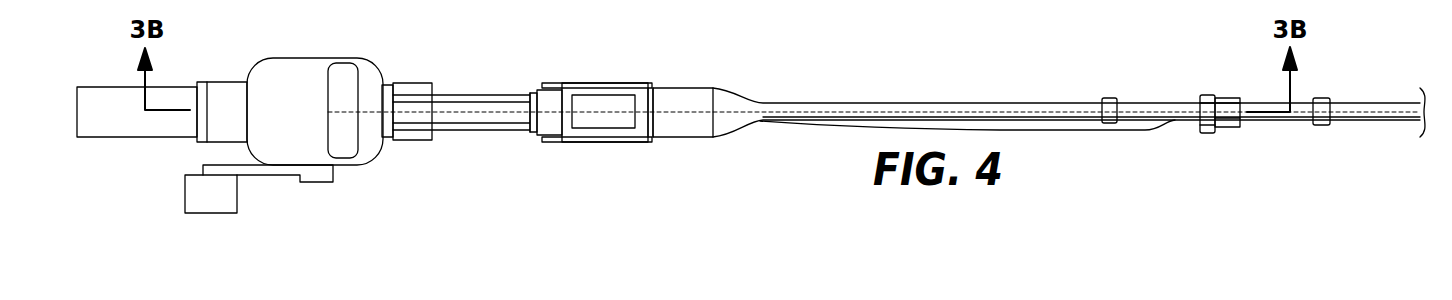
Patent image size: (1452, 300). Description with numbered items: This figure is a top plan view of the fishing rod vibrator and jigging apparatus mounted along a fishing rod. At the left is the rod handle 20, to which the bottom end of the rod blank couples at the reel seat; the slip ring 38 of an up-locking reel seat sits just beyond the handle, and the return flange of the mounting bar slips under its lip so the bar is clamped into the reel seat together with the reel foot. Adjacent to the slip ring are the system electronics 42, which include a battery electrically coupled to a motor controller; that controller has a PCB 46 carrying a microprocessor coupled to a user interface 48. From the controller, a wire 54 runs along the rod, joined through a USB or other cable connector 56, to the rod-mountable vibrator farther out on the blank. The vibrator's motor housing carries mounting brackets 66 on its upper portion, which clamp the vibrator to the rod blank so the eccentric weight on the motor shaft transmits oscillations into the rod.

The rod handle 20 is at (113, 120).
The slip ring 38 is at (405, 87).
The system electronics 42 is at (552, 122).
The PCB 46 is at (618, 83).
The user interface 48 is at (602, 127).
The wire 54 is at (1092, 130).
The cable connector 56 is at (680, 127).
The mounting brackets 66 is at (1208, 92).